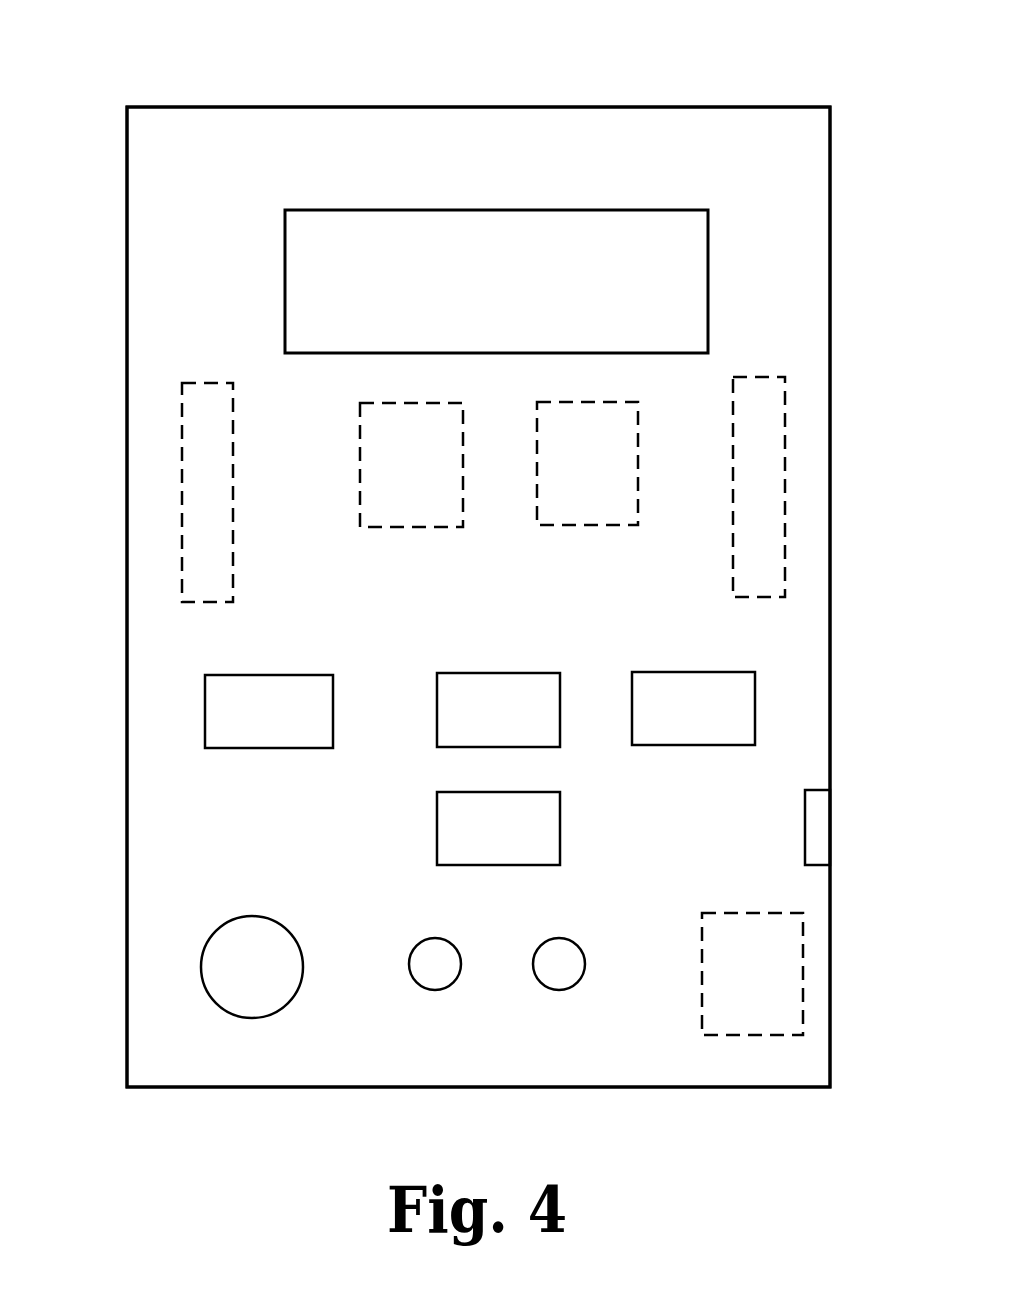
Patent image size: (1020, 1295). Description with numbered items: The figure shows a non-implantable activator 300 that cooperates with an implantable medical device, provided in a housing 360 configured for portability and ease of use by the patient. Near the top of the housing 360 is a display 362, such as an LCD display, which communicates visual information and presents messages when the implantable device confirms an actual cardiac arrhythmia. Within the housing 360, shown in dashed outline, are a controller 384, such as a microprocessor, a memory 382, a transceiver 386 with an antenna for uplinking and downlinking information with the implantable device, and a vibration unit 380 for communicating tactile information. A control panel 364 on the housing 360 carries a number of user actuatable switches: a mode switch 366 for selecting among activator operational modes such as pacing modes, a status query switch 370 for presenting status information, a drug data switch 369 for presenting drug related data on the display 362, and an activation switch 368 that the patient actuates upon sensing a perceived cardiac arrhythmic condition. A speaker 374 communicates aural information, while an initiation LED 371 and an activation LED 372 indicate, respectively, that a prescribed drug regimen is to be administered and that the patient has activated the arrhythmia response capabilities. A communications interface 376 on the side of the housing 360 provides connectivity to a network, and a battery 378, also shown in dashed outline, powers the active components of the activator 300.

The non-implantable activator 300 is at (292, 76).
The housing 360 is at (708, 106).
The display 362 is at (529, 301).
The control panel 364 is at (185, 806).
The mode switch 366 is at (225, 748).
The activation switch 368 is at (560, 823).
The drug data switch 369 is at (463, 747).
The status query switch 370 is at (675, 672).
The initiation LED 371 is at (435, 990).
The activation LED 372 is at (559, 990).
The speaker 374 is at (253, 1018).
The communications interface 376 is at (820, 825).
The battery 378 is at (803, 950).
The vibration unit 380 is at (785, 435).
The memory 382 is at (408, 527).
The controller 384 is at (585, 525).
The transceiver 386 is at (182, 448).